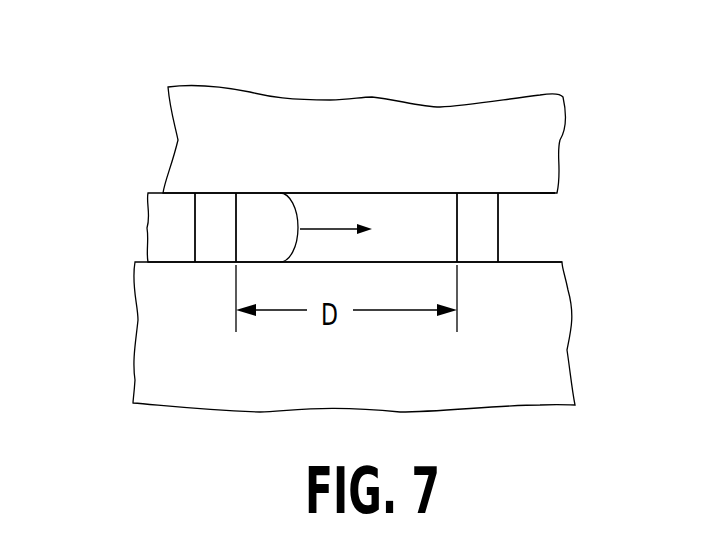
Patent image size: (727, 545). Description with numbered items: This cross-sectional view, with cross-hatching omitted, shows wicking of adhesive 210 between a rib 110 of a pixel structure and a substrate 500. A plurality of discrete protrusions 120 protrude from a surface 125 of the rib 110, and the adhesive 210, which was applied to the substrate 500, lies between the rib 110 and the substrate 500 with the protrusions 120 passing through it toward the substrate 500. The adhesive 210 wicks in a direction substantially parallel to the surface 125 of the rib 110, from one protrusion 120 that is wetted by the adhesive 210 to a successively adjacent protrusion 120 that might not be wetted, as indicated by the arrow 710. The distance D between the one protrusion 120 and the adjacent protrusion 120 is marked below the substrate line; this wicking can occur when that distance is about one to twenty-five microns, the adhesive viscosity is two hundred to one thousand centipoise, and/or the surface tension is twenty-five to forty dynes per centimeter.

The rib 110 is at (463, 157).
The substrate 500 is at (400, 383).
The adhesive 210 is at (158, 217).
The discrete protrusion 120 is at (212, 247).
The surface 125 is at (555, 194).
The arrow 710 is at (325, 228).